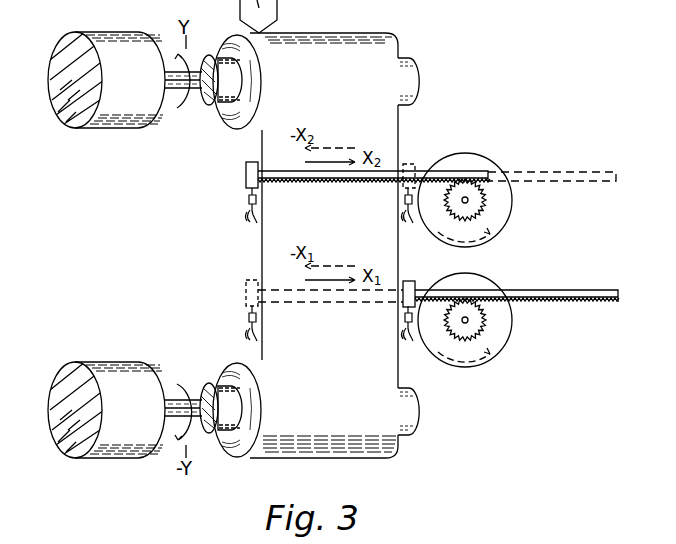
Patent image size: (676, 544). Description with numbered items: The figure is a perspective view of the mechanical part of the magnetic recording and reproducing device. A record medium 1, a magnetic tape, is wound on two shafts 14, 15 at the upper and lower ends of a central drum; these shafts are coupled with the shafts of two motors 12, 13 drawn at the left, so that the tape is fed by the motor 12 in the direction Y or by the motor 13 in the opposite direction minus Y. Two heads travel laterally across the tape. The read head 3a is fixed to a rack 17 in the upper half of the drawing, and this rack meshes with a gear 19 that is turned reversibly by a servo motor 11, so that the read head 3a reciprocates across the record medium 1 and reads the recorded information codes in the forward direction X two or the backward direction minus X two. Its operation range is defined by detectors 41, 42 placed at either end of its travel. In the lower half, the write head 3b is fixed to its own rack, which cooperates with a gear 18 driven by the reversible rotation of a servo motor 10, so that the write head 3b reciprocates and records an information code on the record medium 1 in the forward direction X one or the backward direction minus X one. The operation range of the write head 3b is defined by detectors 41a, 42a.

The record medium 1 is at (354, 33).
The read head 3a is at (246, 167).
The write head 3b is at (408, 281).
The servo motor 10 is at (476, 285).
The servo motor 11 is at (458, 157).
The motor 12 is at (148, 33).
The motor 13 is at (150, 362).
The shaft 14 is at (410, 59).
The shaft 15 is at (411, 436).
The rack 17 is at (473, 171).
The gear 18 is at (562, 290).
The gear 19 is at (482, 207).
The detector 41 is at (246, 206).
The detector 41a is at (246, 322).
The detector 42 is at (415, 220).
The detector 42a is at (421, 339).